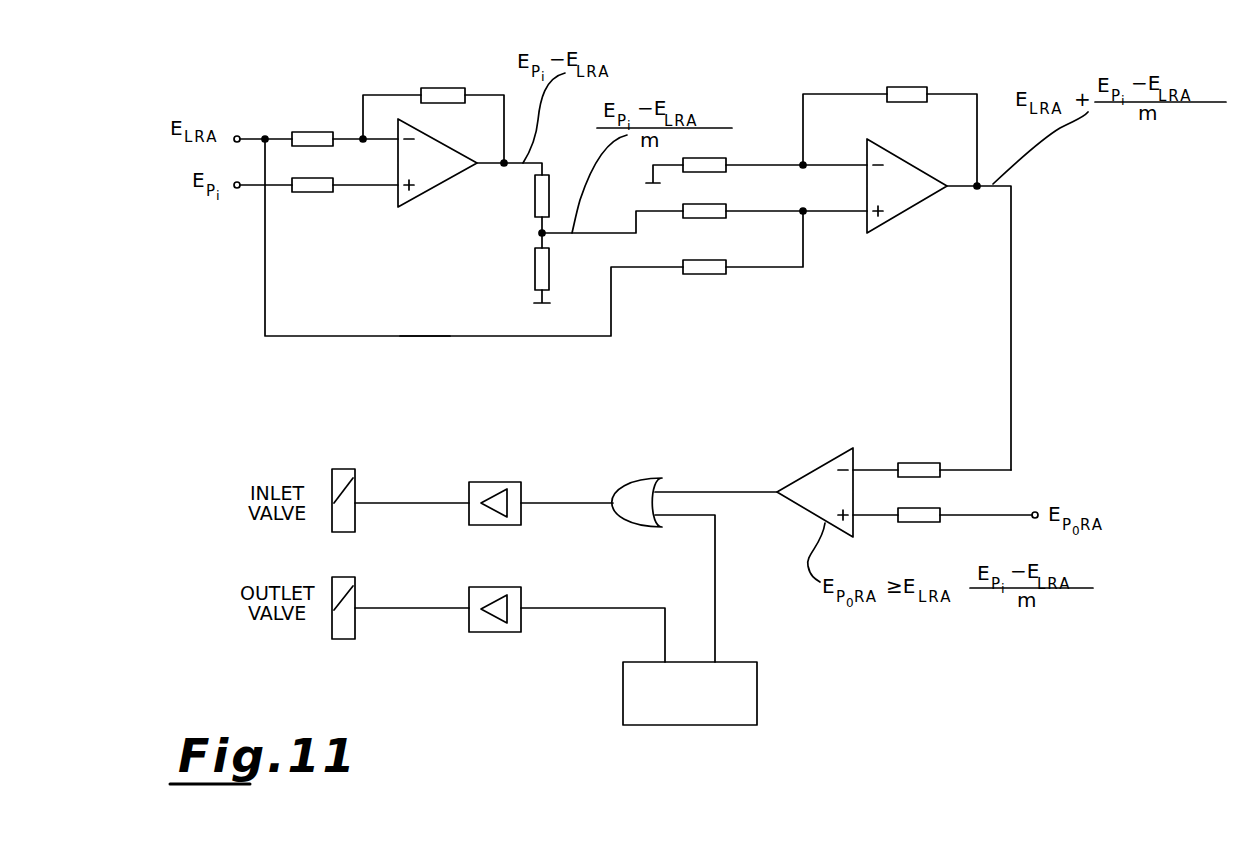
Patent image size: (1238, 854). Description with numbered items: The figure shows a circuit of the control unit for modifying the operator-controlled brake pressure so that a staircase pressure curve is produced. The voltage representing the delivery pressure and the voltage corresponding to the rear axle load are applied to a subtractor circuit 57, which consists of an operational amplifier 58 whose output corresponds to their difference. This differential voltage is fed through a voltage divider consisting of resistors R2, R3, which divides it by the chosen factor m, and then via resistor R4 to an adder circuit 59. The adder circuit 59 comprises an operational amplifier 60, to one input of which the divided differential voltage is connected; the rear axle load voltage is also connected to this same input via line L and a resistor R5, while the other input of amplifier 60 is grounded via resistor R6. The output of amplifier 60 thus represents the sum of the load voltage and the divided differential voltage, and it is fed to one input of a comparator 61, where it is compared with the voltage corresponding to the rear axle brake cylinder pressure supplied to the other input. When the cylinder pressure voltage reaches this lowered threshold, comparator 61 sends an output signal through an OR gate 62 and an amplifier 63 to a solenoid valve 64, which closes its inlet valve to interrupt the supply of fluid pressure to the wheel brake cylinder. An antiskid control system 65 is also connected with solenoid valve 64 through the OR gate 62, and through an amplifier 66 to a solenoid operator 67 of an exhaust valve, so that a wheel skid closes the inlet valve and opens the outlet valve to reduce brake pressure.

The subtractor circuit 57 is at (410, 88).
The operational amplifier 58 is at (427, 176).
The adder circuit 59 is at (875, 87).
The operational amplifier 60 is at (906, 201).
The comparator 61 is at (822, 474).
The OR gate 62 is at (637, 490).
The amplifier 63 is at (481, 519).
The solenoid valve 64 is at (348, 525).
The antiskid control system 65 is at (660, 718).
The amplifier 66 is at (481, 626).
The solenoid operator 67 is at (348, 632).
The resistor R2 is at (538, 190).
The resistor R3 is at (538, 266).
The resistor R4 is at (720, 218).
The resistor R5 is at (720, 275).
The resistor R6 is at (720, 172).
The line L is at (427, 338).